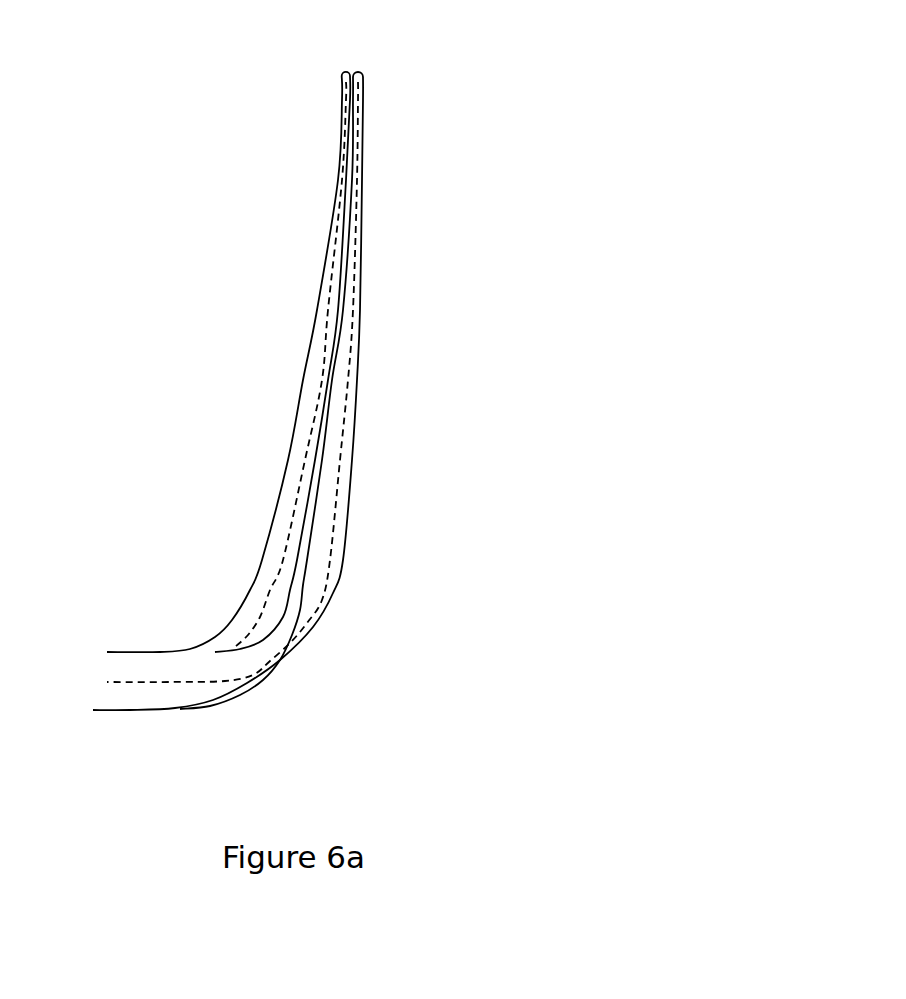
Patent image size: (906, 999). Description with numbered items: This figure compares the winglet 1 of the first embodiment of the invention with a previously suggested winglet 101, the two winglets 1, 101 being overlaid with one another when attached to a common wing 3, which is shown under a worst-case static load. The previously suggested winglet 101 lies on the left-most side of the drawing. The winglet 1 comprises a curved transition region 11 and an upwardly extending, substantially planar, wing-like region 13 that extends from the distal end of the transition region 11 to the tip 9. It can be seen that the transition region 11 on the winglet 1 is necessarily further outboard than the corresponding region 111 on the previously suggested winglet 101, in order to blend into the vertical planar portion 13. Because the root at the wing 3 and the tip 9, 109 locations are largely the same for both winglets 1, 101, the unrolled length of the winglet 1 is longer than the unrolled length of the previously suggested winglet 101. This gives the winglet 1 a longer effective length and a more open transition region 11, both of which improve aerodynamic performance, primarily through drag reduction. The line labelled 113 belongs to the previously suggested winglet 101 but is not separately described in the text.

The winglet 1 is at (313, 359).
The wing 3 is at (85, 680).
The tip 9 is at (337, 88).
The curved transition region 11 is at (335, 602).
The planar wing-like region 13 is at (357, 332).
The previously suggested winglet 101 is at (200, 346).
The tip 109 is at (372, 93).
The transition region 111 is at (228, 608).
The elongate shaft 113 is at (307, 348).